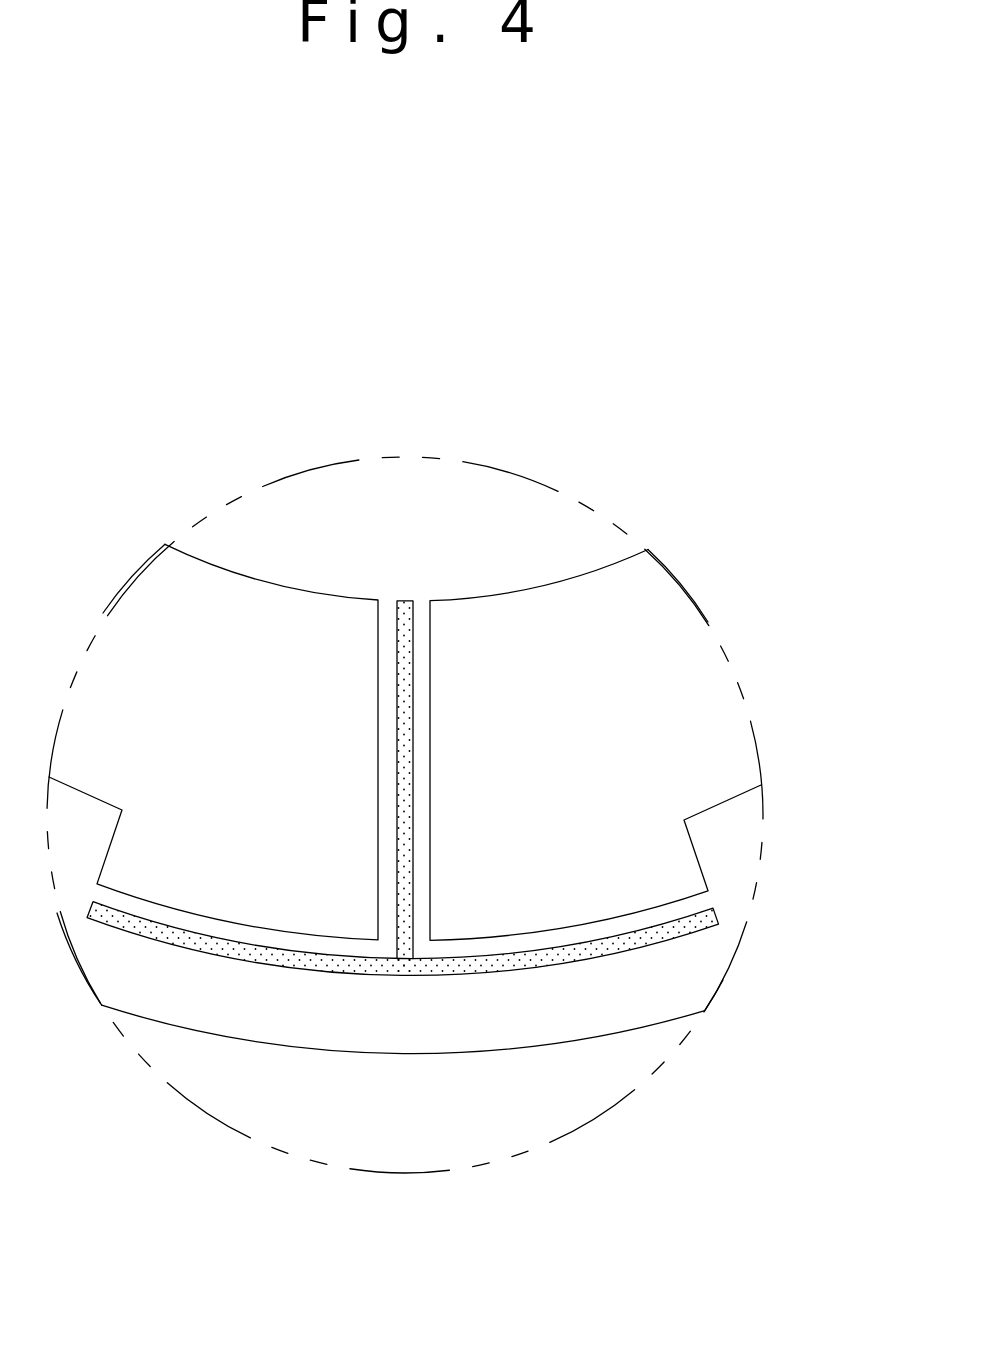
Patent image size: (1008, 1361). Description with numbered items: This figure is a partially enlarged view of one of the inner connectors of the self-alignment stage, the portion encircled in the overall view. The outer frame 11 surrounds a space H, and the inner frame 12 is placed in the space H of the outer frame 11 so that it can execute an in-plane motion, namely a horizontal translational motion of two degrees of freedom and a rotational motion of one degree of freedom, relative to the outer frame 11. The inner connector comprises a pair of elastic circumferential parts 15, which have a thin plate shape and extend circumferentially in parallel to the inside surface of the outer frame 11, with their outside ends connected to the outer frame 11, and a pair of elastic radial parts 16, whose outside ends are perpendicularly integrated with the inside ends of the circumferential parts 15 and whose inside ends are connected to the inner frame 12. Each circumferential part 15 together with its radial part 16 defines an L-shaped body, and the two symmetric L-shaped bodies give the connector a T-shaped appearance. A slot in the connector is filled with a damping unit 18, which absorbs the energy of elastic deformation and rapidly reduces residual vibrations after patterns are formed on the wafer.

The outer frame 11 is at (647, 1003).
The inner frame 12 is at (407, 488).
The elastic circumferential part 15 is at (228, 930).
The elastic radial part 16 is at (383, 825).
The damping unit 18 is at (400, 975).
The space H is at (678, 682).